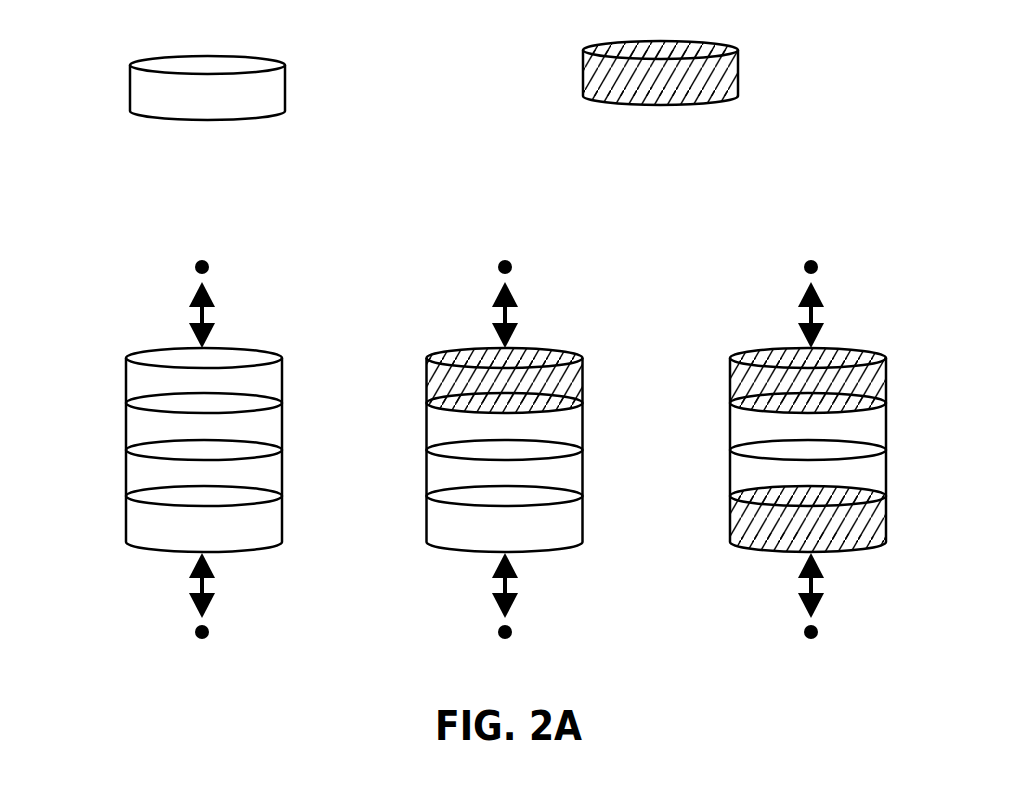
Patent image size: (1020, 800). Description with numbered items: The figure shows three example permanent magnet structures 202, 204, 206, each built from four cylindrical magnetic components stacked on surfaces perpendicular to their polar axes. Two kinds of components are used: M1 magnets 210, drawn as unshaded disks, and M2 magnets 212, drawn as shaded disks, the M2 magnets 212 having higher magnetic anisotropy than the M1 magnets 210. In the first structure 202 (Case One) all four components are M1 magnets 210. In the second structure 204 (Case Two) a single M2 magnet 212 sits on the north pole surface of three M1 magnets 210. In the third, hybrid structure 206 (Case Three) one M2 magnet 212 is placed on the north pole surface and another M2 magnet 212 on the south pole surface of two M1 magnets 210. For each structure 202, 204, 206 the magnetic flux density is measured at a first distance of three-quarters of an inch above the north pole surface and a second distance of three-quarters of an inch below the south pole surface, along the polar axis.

The first example permanent magnet structure 202 is at (233, 198).
The second example permanent magnet structure 204 is at (538, 198).
The third example permanent magnet structure 206 is at (858, 198).
The M1 magnet 210 is at (130, 91).
The M2 magnet 212 is at (738, 72).